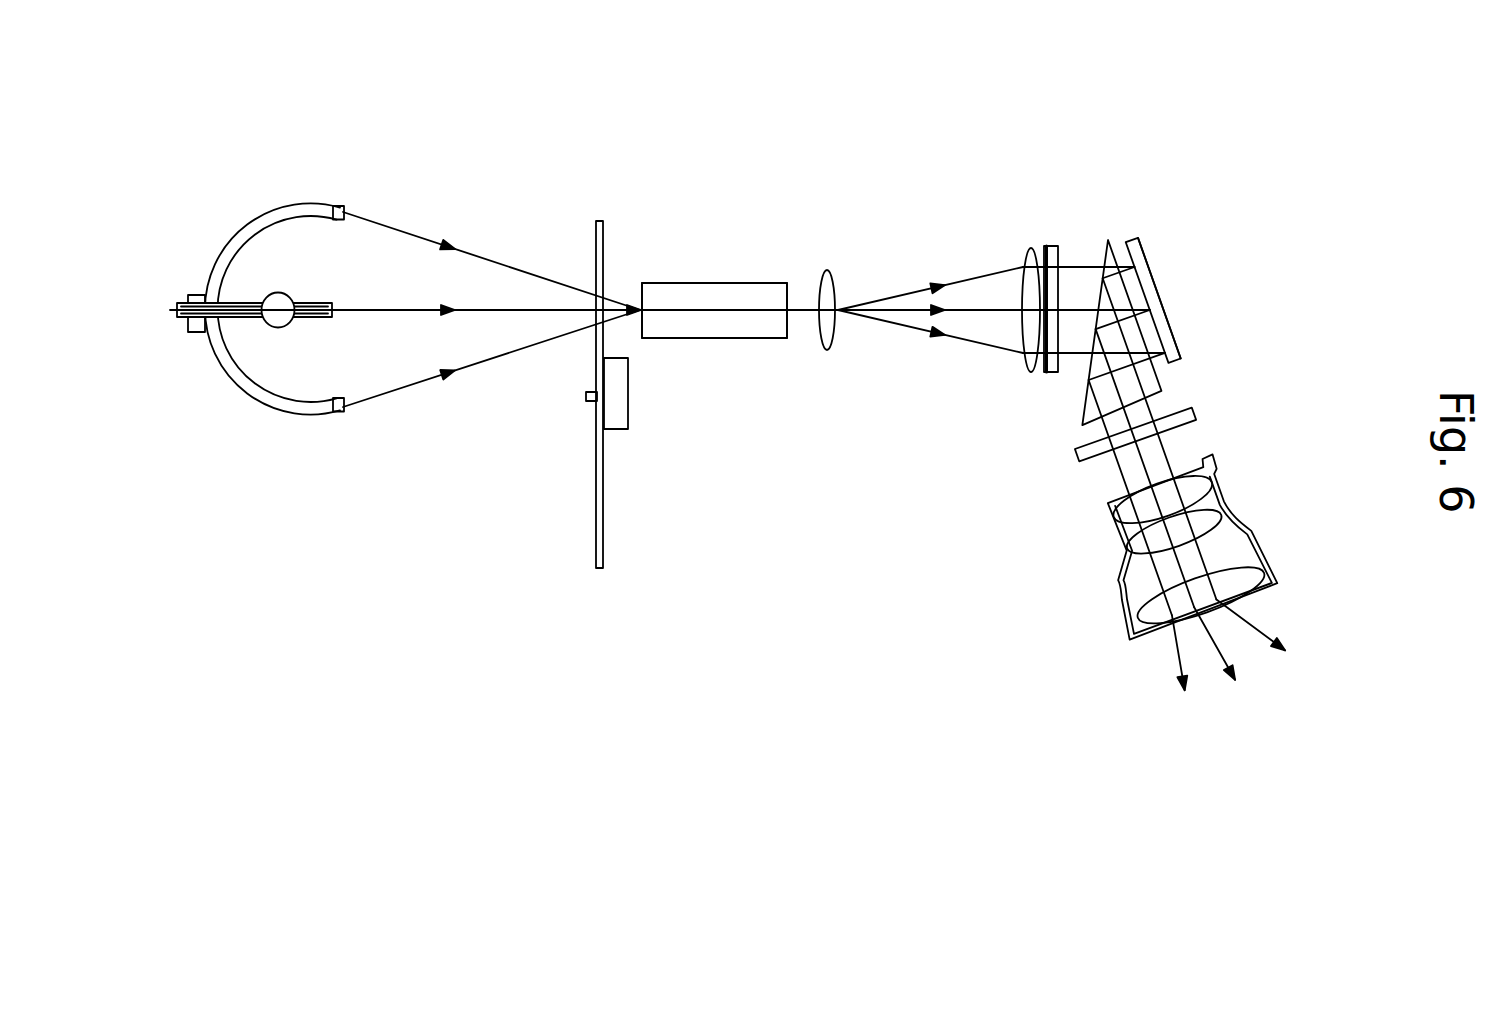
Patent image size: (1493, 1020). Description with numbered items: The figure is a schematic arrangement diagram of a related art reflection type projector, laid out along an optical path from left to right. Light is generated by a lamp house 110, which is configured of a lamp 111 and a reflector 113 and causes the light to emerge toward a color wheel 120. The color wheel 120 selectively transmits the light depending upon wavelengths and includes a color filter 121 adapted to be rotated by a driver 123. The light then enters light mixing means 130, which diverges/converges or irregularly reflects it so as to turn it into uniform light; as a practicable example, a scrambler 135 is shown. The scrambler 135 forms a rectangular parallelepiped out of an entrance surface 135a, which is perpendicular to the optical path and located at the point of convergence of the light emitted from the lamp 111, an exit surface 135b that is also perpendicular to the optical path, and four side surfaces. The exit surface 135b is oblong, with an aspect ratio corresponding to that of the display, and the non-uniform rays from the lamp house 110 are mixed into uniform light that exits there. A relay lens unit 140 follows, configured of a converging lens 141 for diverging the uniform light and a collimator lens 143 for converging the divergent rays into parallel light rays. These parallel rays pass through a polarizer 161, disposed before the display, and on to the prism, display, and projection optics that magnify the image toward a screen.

The lamp house 110 is at (338, 208).
The lamp 111 is at (268, 327).
The reflector 113 is at (331, 410).
The color wheel 120 is at (567, 339).
The color filter 121 is at (597, 505).
The driver 123 is at (617, 421).
The light mixing means 130 is at (774, 323).
The scrambler 135 is at (774, 390).
The entrance surface 135a is at (641, 331).
The exit surface 135b is at (850, 371).
The relay lens unit 140 is at (929, 351).
The converging lens 141 is at (835, 334).
The collimator lens 143 is at (1022, 368).
The polarizer 161 is at (1053, 374).